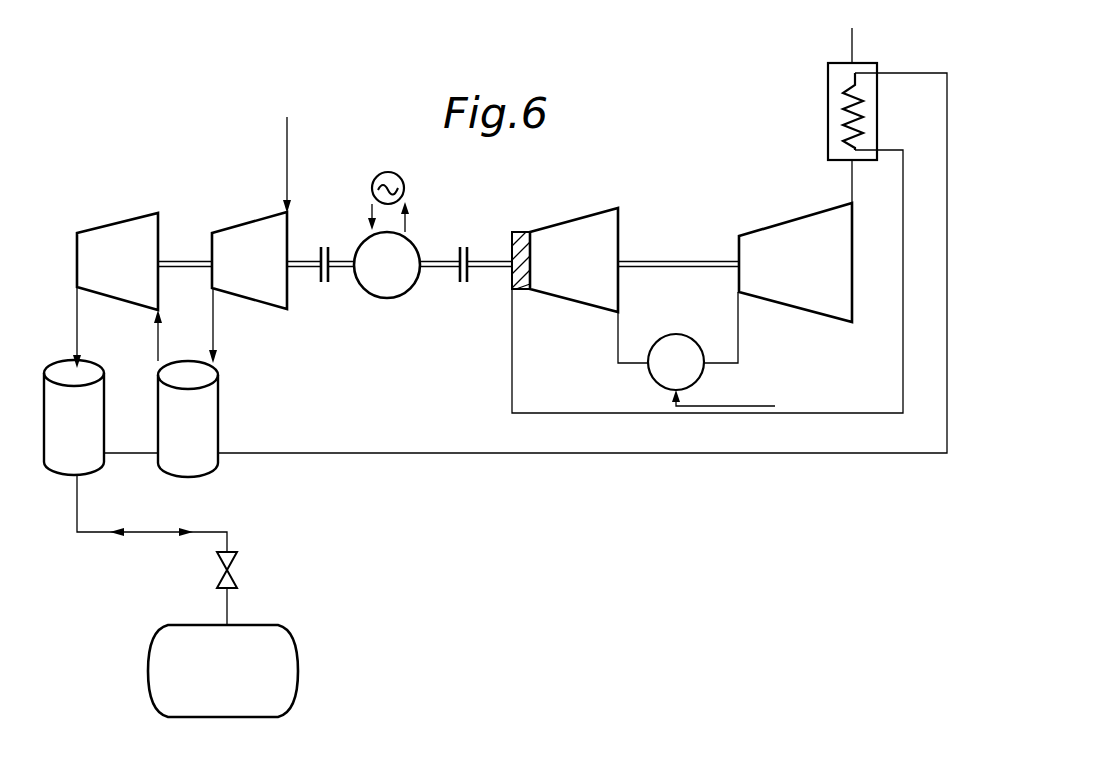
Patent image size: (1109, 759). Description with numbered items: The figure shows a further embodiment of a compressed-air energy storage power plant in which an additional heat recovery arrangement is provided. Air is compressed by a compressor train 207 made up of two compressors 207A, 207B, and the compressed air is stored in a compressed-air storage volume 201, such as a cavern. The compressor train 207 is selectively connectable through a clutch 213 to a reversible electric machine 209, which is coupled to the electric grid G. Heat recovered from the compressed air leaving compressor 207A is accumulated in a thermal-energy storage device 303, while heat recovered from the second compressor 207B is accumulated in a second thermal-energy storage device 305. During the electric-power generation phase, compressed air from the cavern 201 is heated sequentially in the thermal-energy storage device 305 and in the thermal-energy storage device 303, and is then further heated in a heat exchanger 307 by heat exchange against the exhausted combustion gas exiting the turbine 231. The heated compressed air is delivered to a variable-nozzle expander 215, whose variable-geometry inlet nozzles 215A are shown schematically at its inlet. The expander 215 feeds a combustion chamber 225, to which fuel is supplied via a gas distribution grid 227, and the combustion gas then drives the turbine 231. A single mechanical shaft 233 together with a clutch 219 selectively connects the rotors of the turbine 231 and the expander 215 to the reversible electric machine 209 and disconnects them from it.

The compressed-air storage volume 201 is at (258, 635).
The compressor train 207 is at (238, 172).
The compressor 207A is at (238, 236).
The compressor 207B is at (113, 236).
The reversible electric machine 209 is at (383, 283).
The clutch 213 is at (320, 278).
The variable-nozzle expander 215 is at (573, 236).
The variable-geometry inlet nozzles 215A is at (520, 230).
The clutch 219 is at (453, 250).
The combustion chamber 225 is at (711, 324).
The gas distribution grid 227 is at (722, 406).
The turbine 231 is at (808, 225).
The mechanical shaft 233 is at (497, 268).
The thermal-energy storage device 303 is at (205, 416).
The second thermal-energy storage device 305 is at (98, 405).
The heat exchanger 307 is at (822, 124).
The electrical grid G is at (396, 166).